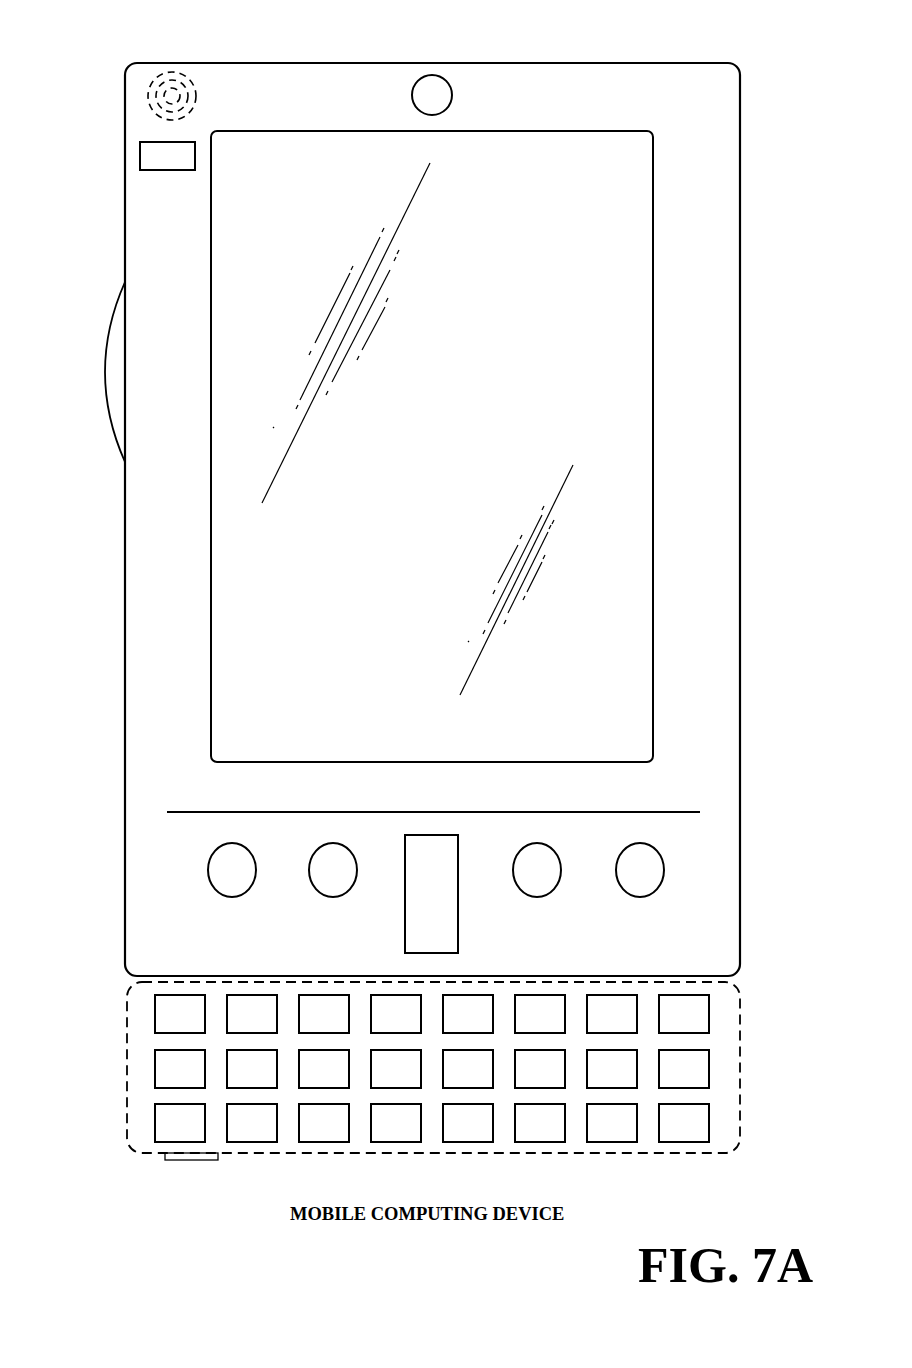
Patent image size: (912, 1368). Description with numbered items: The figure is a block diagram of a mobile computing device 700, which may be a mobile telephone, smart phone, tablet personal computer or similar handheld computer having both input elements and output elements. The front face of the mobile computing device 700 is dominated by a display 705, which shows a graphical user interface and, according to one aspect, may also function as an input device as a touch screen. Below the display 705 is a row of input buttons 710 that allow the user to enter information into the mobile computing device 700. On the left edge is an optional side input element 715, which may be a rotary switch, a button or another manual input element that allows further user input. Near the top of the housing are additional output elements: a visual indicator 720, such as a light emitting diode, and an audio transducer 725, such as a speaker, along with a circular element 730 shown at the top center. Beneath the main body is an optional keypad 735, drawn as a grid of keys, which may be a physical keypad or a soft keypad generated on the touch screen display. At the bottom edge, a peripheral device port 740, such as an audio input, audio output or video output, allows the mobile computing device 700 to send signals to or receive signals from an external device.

The mobile computing device 700 is at (706, 63).
The display 705 is at (232, 608).
The input buttons 710 is at (232, 897).
The side input element 715 is at (105, 372).
The visual indicator 720 is at (140, 155).
The audio transducer 725 is at (148, 96).
The camera 730 is at (434, 75).
The keypad 735 is at (133, 1065).
The peripheral device port 740 is at (170, 1162).